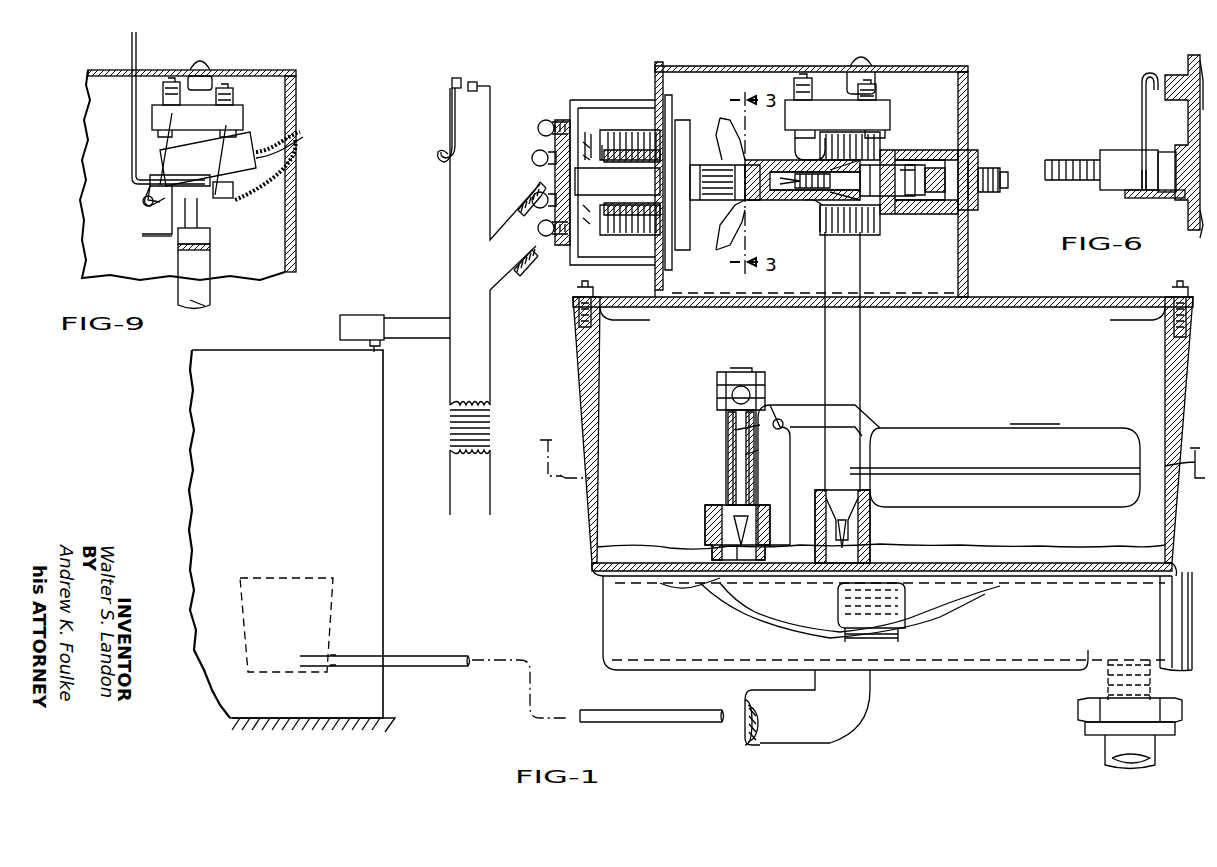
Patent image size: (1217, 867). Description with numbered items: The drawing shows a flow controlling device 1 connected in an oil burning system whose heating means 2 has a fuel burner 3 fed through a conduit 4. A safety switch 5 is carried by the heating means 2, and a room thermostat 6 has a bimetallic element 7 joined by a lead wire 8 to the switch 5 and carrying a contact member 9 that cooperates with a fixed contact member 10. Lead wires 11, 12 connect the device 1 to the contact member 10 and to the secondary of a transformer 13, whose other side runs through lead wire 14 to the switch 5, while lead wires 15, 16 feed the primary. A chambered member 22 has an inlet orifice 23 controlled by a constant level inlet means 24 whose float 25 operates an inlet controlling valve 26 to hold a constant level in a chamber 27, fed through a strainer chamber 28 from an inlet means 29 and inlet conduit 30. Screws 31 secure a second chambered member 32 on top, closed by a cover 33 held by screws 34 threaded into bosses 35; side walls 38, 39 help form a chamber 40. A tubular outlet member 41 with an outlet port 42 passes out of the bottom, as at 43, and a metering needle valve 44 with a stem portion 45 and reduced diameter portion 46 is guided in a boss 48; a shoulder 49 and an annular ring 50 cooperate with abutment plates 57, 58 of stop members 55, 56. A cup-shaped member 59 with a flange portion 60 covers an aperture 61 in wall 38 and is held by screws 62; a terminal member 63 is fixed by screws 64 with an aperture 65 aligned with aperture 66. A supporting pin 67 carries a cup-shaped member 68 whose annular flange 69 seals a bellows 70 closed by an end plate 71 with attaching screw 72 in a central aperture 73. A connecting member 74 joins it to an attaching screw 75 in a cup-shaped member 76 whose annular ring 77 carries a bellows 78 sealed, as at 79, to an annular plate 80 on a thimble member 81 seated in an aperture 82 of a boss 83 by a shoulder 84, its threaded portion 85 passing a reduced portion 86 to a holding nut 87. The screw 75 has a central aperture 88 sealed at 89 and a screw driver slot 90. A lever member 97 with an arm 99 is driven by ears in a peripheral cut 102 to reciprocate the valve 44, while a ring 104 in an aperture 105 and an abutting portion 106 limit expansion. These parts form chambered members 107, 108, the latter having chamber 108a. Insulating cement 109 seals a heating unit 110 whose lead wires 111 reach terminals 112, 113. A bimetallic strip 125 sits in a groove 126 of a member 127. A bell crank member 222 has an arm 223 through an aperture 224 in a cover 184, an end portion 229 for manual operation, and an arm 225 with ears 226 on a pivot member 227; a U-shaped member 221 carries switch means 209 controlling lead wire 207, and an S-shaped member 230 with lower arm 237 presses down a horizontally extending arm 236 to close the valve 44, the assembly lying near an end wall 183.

In FIG. 1, the flow controlling device 1 is at (570, 338).
In FIG. 1, the heating means 2 is at (400, 571).
In FIG. 1, the fuel burner 3 is at (292, 578).
In FIG. 1, the conduit 4 is at (442, 668).
In FIG. 1, the safety or control switch 5 is at (362, 315).
In FIG. 1, the room thermostat 6 is at (471, 68).
In FIG. 1, the bimetallic element 7 is at (452, 118).
In FIG. 1, the lead wire 8 is at (450, 218).
In FIG. 1, the contact member 9 is at (462, 80).
In FIG. 1, the fixed contact member 10 is at (490, 80).
In FIG. 1, the lead wire 11 is at (490, 132).
In FIG. 1, the lead wire 12 is at (500, 302).
In FIG. 1, the transformer 13 is at (502, 422).
In FIG. 1, the lead wire 14 is at (450, 362).
In FIG. 1, the lead wire 15 is at (490, 494).
In FIG. 1, the lead wire 16 is at (450, 495).
In FIG. 1, the chambered member 22 is at (575, 365).
In FIG. 1, the inlet orifice 23 is at (712, 520).
In FIG. 1, the constant level inlet means 24 is at (788, 395).
In FIG. 1, the float 25 is at (1020, 500).
In FIG. 1, the inlet controlling valve 26 is at (728, 466).
In FIG. 1, the chamber 27 is at (1038, 376).
In FIG. 1, the strainer chamber 28 is at (950, 628).
In FIG. 1, the inlet means 29 is at (1085, 728).
In FIG. 1, the inlet conduit 30 is at (1105, 752).
In FIG. 1, the screws 31 is at (578, 288).
In FIG. 1, the second chambered member 32 is at (968, 94).
In FIG. 1, the cover 33 is at (922, 66).
In FIG. 9, the screws 34 is at (204, 62).
In FIG. 1, the screws 34 is at (858, 60).
In FIG. 9, the bosses 35 is at (208, 80).
In FIG. 1, the bosses 35 is at (866, 84).
In FIG. 1, the side wall 38 is at (655, 80).
In FIG. 6, the side wall 39 is at (1187, 155).
In FIG. 1, the side wall 39 is at (968, 113).
In FIG. 1, the chamber 40 is at (903, 281).
In FIG. 1, the tubular outlet member 41 is at (878, 541).
In FIG. 1, the outlet port 42 is at (850, 520).
In FIG. 1, the exterior portion of outlet member 43 is at (880, 608).
In FIG. 1, the metering needle valve 44 is at (830, 510).
In FIG. 9, the stem portion 45 is at (205, 298).
In FIG. 1, the stem portion 45 is at (860, 378).
In FIG. 9, the reduced diameter portion 46 is at (198, 216).
In FIG. 9, the boss 48 is at (243, 112).
In FIG. 1, the boss 48 is at (858, 122).
In FIG. 9, the shoulder 49 is at (210, 235).
In FIG. 9, the annular ring 50 is at (208, 159).
In FIG. 9, the stop member 55 is at (233, 95).
In FIG. 1, the stop member 55 is at (876, 92).
In FIG. 9, the stop member 56 is at (166, 82).
In FIG. 1, the stop member 56 is at (794, 90).
In FIG. 9, the abutment plate 57 is at (222, 198).
In FIG. 9, the abutment plate 58 is at (174, 181).
In FIG. 1, the abutment plate 58 is at (808, 140).
In FIG. 1, the cup-shaped member 59 is at (572, 262).
In FIG. 1, the rectangular flange portion 60 is at (652, 265).
In FIG. 1, the aperture 61 is at (655, 110).
In FIG. 1, the screws 62 is at (670, 100).
In FIG. 1, the terminal member 63 is at (561, 120).
In FIG. 1, the screws 64 is at (542, 120).
In FIG. 1, the aperture 65 is at (538, 192).
In FIG. 1, the aperture 66 is at (575, 183).
In FIG. 1, the supporting pin 67 is at (626, 191).
In FIG. 1, the cup-shaped member 68 is at (620, 132).
In FIG. 1, the annular flange 69 is at (606, 130).
In FIG. 1, the bellows 70 is at (628, 236).
In FIG. 1, the annular end plate 71 is at (697, 200).
In FIG. 1, the attaching screw 72 is at (704, 165).
In FIG. 1, the central aperture 73 is at (706, 200).
In FIG. 1, the connecting member 74 is at (718, 152).
In FIG. 1, the attaching screw 75 is at (797, 195).
In FIG. 1, the cup-shaped member 76 is at (812, 210).
In FIG. 1, the annular ring 77 is at (822, 235).
In FIG. 1, the bellows 78 is at (830, 235).
In FIG. 1, the seal 79 is at (884, 215).
In FIG. 1, the annular plate 80 is at (895, 240).
In FIG. 1, the thimble member 81 is at (945, 214).
In FIG. 1, the aperture 82 is at (945, 160).
In FIG. 1, the boss 83 is at (926, 150).
In FIG. 1, the shoulder 84 is at (918, 214).
In FIG. 1, the threaded portion 85 is at (990, 170).
In FIG. 1, the reduced portion 86 is at (975, 200).
In FIG. 1, the holding nut 87 is at (976, 155).
In FIG. 1, the central aperture 88 is at (903, 168).
In FIG. 1, the seal 89 is at (790, 205).
In FIG. 1, the screw driver slot 90 is at (1004, 186).
In FIG. 1, the lever member 97 is at (738, 262).
In FIG. 1, the arm 99 is at (758, 150).
In FIG. 1, the peripheral cut 102 is at (758, 162).
In FIG. 1, the ring 104 is at (905, 214).
In FIG. 1, the aperture 105 is at (912, 165).
In FIG. 1, the abutting portion 106 is at (934, 168).
In FIG. 1, the pressure responsive chambered member 107 is at (606, 234).
In FIG. 1, the second pressure responsive chambered member 108 is at (840, 132).
In FIG. 1, the chamber 108a is at (858, 238).
In FIG. 1, the electrical insulating cement 109 is at (592, 132).
In FIG. 1, the electrical resistance heating unit 110 is at (682, 238).
In FIG. 1, the lead wires 111 is at (584, 177).
In FIG. 1, the terminal 112 is at (532, 158).
In FIG. 1, the terminal 113 is at (514, 262).
In FIG. 6, the bimetallic strip 125 is at (1142, 100).
In FIG. 6, the groove 126 is at (1142, 185).
In FIG. 6, the member 127 is at (1116, 150).
In FIG. 9, the end wall 183 is at (296, 218).
In FIG. 9, the cover 184 is at (283, 70).
In FIG. 9, the lead wire 207 is at (296, 172).
In FIG. 9, the switch means 209 is at (246, 150).
In FIG. 9, the U-shaped member 221 is at (176, 126).
In FIG. 9, the bell crank member 222 is at (120, 150).
In FIG. 9, the arm 223 is at (132, 108).
In FIG. 9, the aperture 224 is at (100, 70).
In FIG. 9, the arm 225 is at (170, 200).
In FIG. 9, the ears 226 is at (146, 192).
In FIG. 9, the pivot member 227 is at (143, 204).
In FIG. 9, the end portion 229 is at (132, 50).
In FIG. 9, the S-shaped member 230 is at (155, 236).
In FIG. 9, the horizontally extending arm 236 is at (210, 248).
In FIG. 9, the lower arm 237 is at (170, 236).